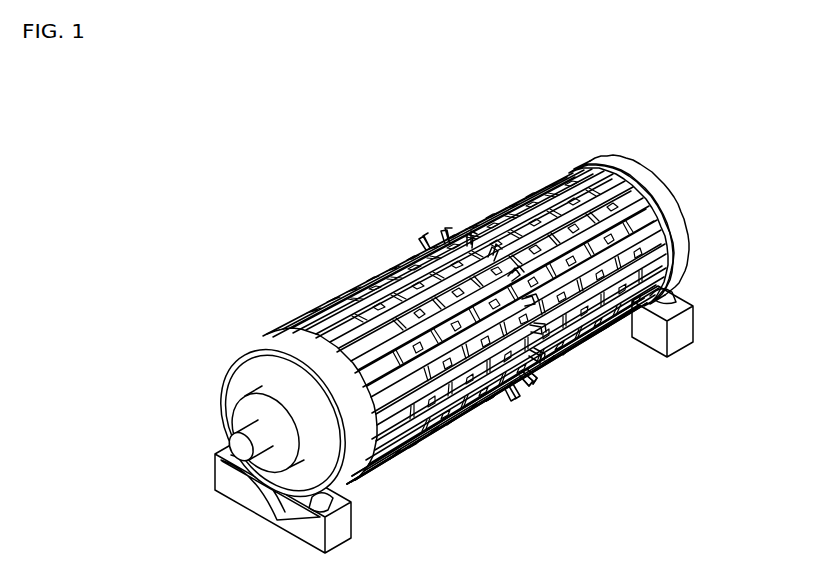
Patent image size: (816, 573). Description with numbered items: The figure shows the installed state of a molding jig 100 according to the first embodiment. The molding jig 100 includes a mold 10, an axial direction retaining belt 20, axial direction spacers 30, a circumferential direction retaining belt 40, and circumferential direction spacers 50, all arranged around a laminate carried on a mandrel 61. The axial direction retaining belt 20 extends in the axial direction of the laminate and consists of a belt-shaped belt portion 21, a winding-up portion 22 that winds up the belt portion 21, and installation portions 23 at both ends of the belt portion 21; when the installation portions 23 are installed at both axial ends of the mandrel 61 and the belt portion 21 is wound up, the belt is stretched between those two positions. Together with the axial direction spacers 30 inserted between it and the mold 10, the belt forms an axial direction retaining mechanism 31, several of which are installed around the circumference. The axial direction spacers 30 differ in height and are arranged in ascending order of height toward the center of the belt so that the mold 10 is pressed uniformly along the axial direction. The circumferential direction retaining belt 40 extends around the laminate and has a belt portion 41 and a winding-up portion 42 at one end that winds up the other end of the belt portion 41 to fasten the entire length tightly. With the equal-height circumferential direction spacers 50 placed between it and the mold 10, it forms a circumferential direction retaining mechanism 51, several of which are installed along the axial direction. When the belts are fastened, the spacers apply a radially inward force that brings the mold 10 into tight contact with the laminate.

The molding jig 100 is at (369, 225).
The mold 10 is at (322, 300).
The axial direction retaining belt 20 is at (477, 413).
The belt portion 21 is at (553, 361).
The winding-up portion 22 is at (533, 377).
The installation portions 23 is at (365, 473).
The axial direction spacers 30 is at (490, 391).
The axial direction retaining mechanism 31 is at (497, 453).
The circumferential direction retaining belt 40 is at (604, 166).
The belt portion 41 is at (636, 190).
The winding-up portion 42 is at (657, 224).
The circumferential direction spacers 50 is at (573, 165).
The circumferential direction retaining mechanism 51 is at (580, 134).
The mandrel 61 is at (247, 354).